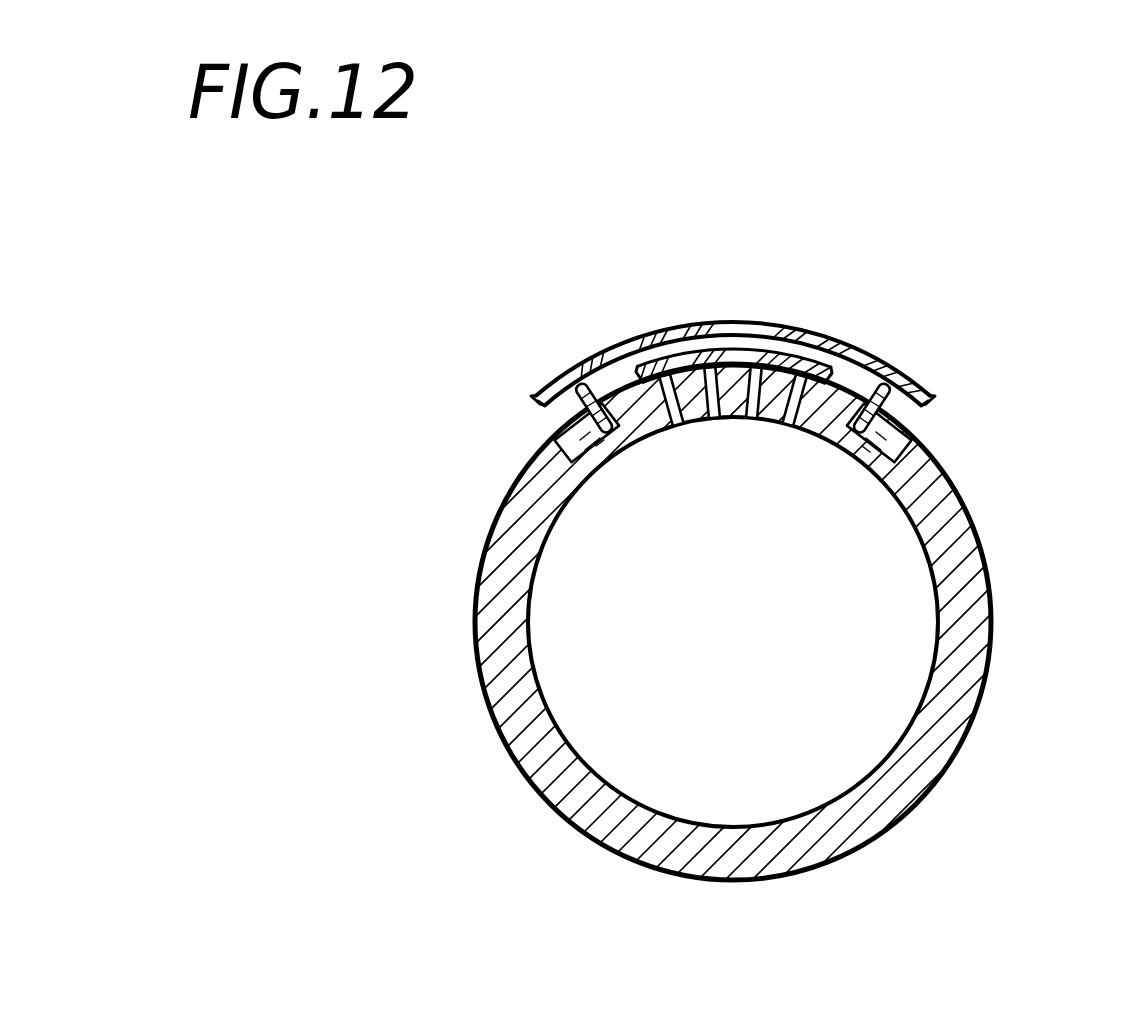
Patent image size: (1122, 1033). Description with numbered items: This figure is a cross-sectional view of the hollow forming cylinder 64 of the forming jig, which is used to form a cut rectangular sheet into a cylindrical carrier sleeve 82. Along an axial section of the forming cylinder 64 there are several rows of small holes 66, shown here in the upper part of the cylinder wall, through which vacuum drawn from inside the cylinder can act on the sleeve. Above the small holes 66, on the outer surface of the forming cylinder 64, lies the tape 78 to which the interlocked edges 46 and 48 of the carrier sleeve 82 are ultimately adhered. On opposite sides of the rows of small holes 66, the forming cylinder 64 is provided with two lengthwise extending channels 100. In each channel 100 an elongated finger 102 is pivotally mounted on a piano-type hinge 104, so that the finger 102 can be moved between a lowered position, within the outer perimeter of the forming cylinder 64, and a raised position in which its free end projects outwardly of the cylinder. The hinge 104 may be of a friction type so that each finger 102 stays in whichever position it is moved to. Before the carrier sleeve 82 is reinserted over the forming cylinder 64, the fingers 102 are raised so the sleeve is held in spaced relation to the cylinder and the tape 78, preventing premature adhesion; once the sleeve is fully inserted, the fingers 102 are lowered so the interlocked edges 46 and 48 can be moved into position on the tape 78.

The forming cylinder 64 is at (993, 601).
The small holes 66 is at (767, 398).
The tape 78 is at (803, 330).
The carrier sleeve 82 is at (720, 305).
The interlocked edge 46 is at (705, 322).
The interlocked edge 48 is at (745, 320).
The channel 100 is at (907, 428).
The finger 102 is at (577, 406).
The piano-type hinge 104 is at (556, 432).